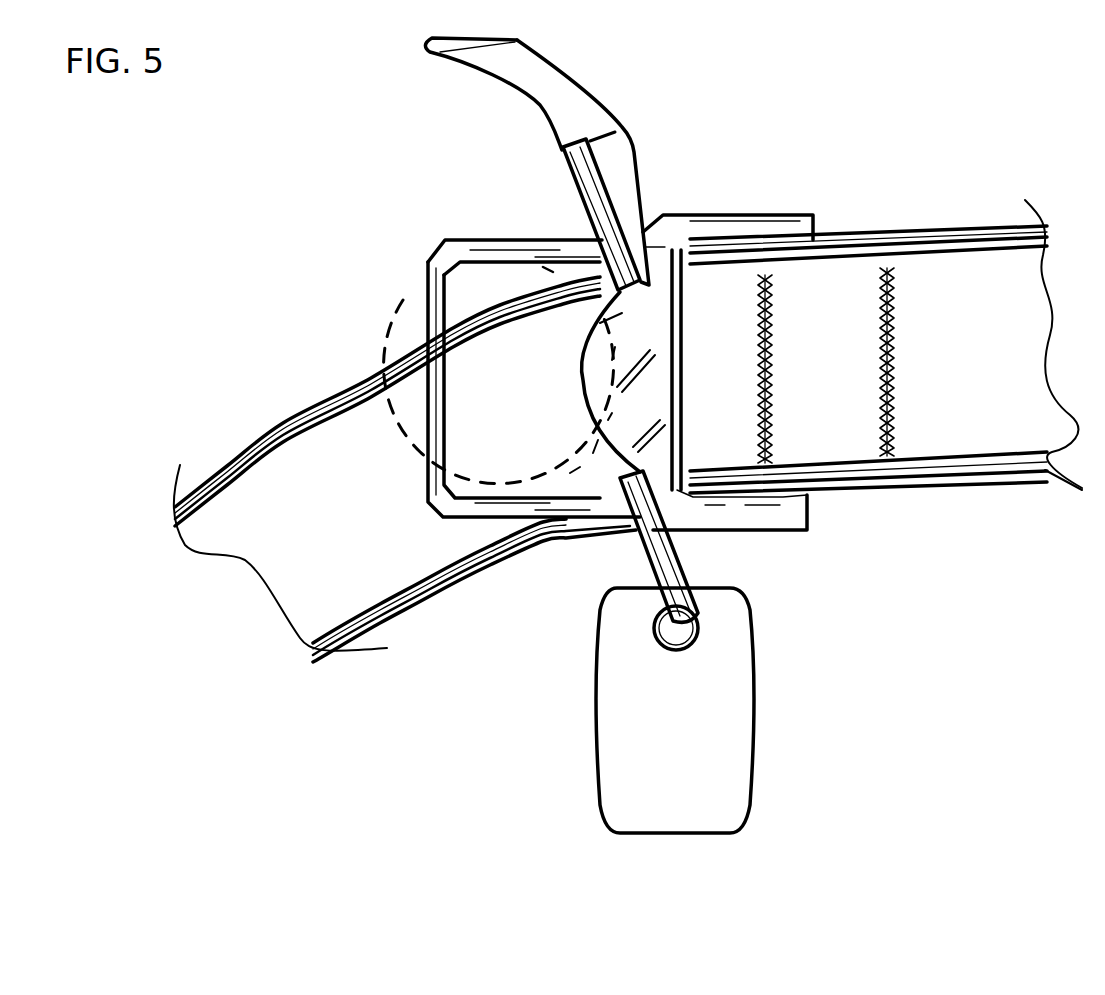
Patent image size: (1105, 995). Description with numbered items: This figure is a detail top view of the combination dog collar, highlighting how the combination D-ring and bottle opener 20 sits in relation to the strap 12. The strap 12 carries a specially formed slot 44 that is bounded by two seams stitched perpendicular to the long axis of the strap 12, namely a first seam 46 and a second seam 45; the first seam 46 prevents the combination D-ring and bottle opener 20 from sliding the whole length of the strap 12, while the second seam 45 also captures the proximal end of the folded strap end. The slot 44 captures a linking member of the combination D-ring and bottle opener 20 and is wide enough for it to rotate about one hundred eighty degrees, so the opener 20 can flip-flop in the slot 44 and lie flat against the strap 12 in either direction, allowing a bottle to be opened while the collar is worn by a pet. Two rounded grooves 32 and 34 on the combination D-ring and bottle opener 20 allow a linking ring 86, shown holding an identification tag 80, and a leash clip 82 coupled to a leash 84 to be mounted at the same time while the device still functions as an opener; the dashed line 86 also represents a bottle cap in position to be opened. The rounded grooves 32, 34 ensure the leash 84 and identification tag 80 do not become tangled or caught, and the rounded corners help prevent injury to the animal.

The strap 12 is at (310, 455).
The combination D-ring and bottle opener 20 is at (683, 215).
The groove 32 is at (615, 497).
The groove 34 is at (597, 302).
The slot 44 is at (858, 505).
The second seam 45 is at (893, 337).
The first seam 46 is at (770, 310).
The identification tag 80 is at (710, 762).
The leash clip 82 is at (578, 175).
The leash 84 is at (558, 92).
The linking ring 86 is at (403, 300).